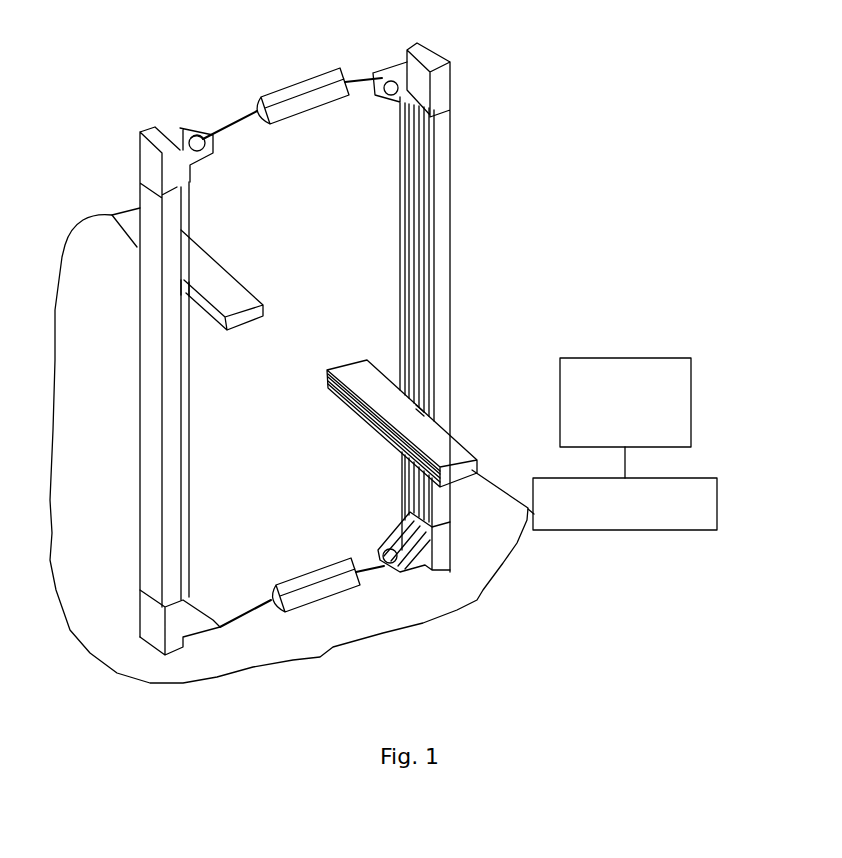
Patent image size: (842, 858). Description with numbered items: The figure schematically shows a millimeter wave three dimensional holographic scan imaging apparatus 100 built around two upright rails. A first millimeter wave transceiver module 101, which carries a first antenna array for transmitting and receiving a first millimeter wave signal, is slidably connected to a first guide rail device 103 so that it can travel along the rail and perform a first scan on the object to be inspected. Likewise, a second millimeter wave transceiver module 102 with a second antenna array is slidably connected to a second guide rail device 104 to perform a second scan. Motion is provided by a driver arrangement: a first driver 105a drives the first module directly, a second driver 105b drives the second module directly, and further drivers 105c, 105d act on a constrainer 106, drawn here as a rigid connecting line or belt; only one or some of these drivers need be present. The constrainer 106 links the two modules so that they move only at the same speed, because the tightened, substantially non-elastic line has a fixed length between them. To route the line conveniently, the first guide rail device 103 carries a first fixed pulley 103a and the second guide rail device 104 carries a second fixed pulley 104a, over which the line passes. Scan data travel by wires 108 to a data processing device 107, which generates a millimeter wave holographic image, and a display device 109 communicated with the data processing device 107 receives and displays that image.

The millimeter wave three dimensional holographic scan imaging apparatus 100 is at (516, 34).
The first millimeter wave transceiver module 101 is at (207, 277).
The second millimeter wave transceiver module 102 is at (428, 440).
The first guide rail device 103 is at (196, 373).
The first fixed pulley 103a is at (190, 148).
The second guide rail device 104 is at (436, 307).
The second fixed pulley 104a is at (380, 92).
The first driver 105a is at (180, 288).
The second driver 105b is at (423, 413).
The driver 105c is at (298, 125).
The driver 105d is at (315, 563).
The constrainer 106 is at (247, 118).
The data processing device 107 is at (717, 500).
The wires 108 is at (473, 600).
The display device 109 is at (690, 398).